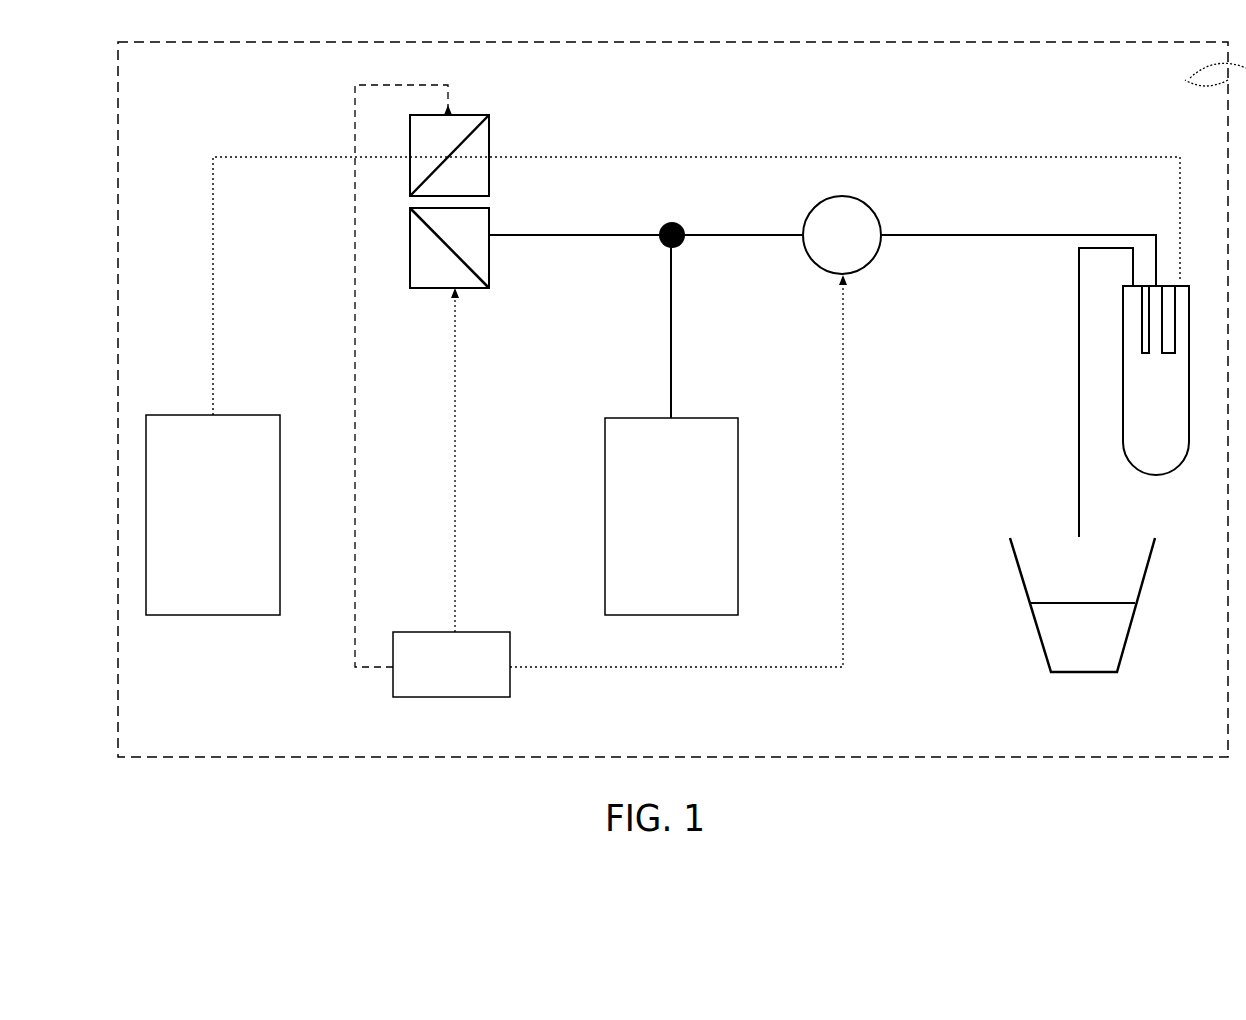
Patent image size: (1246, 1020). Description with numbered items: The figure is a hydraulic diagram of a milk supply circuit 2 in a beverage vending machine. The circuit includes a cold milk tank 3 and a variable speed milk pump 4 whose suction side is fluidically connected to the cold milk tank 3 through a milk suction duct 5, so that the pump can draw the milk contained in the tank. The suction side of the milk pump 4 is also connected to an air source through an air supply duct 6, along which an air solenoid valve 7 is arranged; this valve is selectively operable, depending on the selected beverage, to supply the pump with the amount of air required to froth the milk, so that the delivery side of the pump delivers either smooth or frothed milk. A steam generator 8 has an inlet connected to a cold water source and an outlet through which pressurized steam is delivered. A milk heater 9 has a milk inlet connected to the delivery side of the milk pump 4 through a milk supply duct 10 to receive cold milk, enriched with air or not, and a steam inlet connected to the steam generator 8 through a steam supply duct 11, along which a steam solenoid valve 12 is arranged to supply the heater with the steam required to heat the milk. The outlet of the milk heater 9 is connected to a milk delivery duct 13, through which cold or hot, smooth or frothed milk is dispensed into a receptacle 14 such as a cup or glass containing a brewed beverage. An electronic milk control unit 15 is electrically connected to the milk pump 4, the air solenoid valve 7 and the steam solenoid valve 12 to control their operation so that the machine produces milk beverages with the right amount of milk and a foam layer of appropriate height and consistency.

The milk supply circuit 2 is at (886, 143).
The cold milk tank 3 is at (617, 576).
The variable speed milk pump 4 is at (873, 252).
The milk suction duct 5 is at (672, 350).
The air supply duct 6 is at (588, 237).
The air solenoid valve 7 is at (489, 278).
The steam generator 8 is at (197, 612).
The milk heater 9 is at (1172, 458).
The milk supply duct 10 is at (990, 237).
The steam supply duct 11 is at (1057, 156).
The steam solenoid valve 12 is at (489, 125).
The milk delivery duct 13 is at (1078, 390).
The receptacle 14 is at (1058, 645).
The electronic milk control unit 15 is at (398, 686).